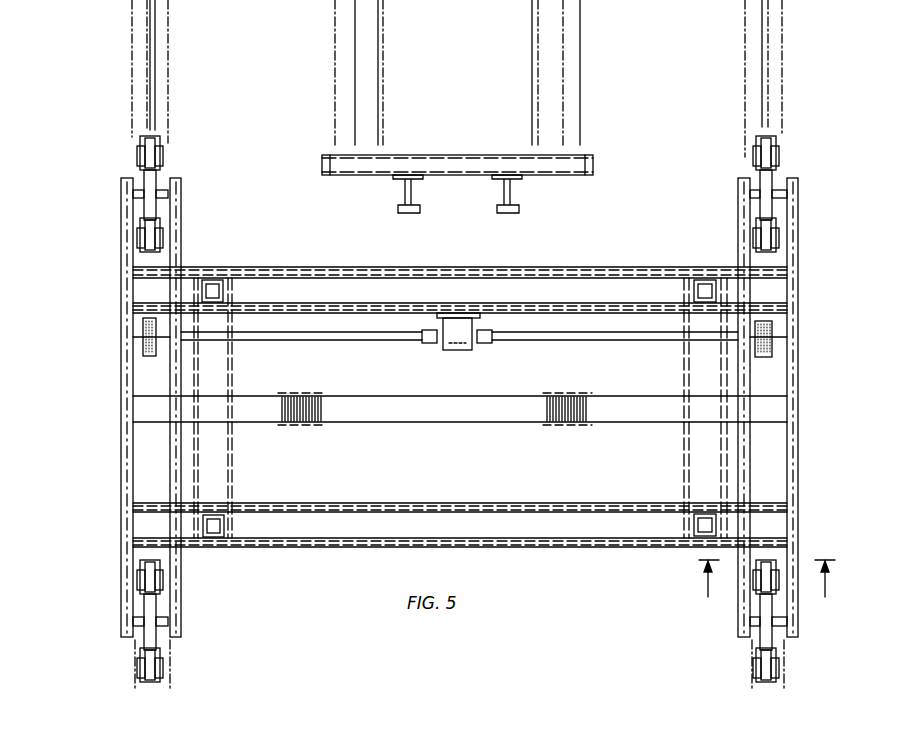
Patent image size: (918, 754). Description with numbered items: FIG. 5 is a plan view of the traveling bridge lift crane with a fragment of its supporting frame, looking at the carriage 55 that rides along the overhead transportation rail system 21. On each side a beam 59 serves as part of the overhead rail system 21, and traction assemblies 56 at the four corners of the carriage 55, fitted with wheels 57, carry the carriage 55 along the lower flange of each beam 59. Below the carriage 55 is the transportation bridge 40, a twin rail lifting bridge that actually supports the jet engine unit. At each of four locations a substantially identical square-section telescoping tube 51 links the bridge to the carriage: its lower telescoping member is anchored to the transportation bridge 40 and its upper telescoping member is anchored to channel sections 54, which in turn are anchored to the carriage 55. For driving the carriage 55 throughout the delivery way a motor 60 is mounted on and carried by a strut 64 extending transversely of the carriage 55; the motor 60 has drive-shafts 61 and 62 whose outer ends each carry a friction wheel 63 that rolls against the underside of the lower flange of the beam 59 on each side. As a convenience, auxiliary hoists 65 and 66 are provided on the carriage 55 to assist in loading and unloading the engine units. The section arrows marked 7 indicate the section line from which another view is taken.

The overhead transportation rail system 21 is at (142, 58).
The beam 59 is at (132, 4).
The transportation bridge 40 is at (596, 167).
The carriage 55 is at (797, 418).
The channel sections 54 is at (572, 268).
The strut 64 is at (326, 304).
The auxiliary hoist 65 is at (328, 428).
The auxiliary hoist 66 is at (549, 428).
The telescoping tube 51 is at (212, 281).
The drive-shaft 62 is at (365, 342).
The drive-shaft 61 is at (590, 341).
The motor 60 is at (459, 350).
The friction wheel 63 is at (143, 340).
The wheels 57 is at (136, 155).
The traction assemblies 56 is at (147, 210).
The section line 7- 7 is at (766, 595).